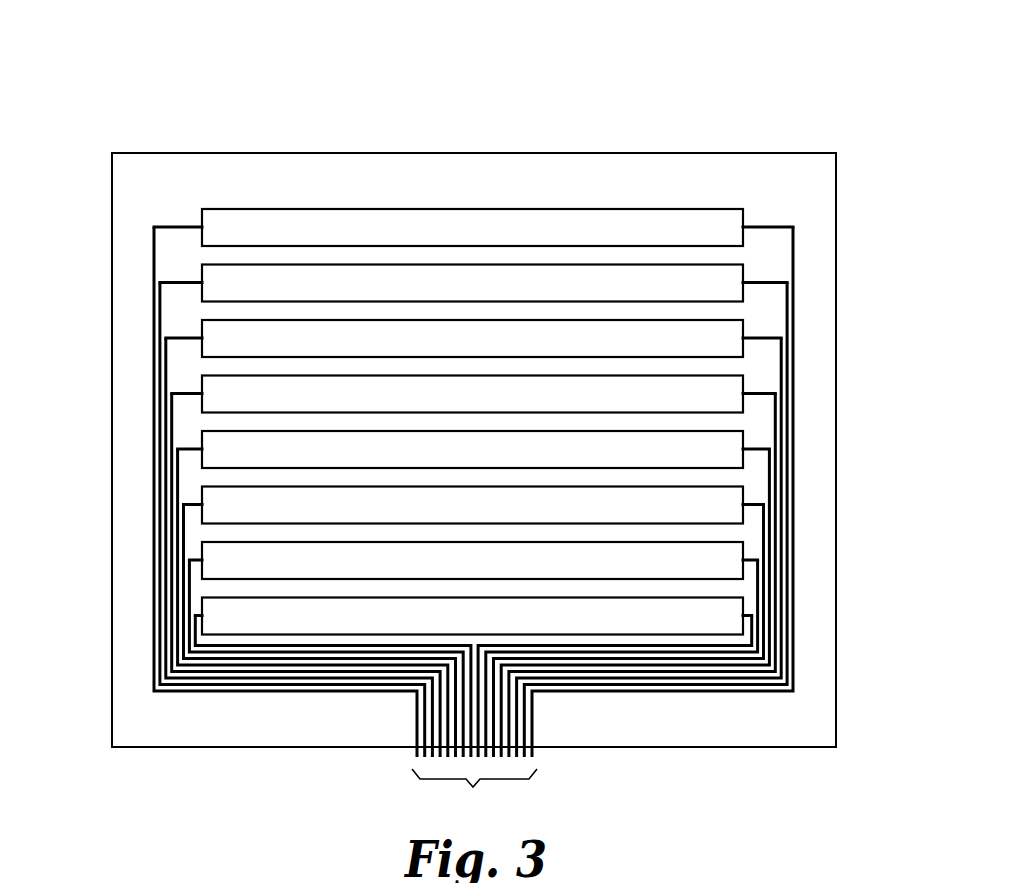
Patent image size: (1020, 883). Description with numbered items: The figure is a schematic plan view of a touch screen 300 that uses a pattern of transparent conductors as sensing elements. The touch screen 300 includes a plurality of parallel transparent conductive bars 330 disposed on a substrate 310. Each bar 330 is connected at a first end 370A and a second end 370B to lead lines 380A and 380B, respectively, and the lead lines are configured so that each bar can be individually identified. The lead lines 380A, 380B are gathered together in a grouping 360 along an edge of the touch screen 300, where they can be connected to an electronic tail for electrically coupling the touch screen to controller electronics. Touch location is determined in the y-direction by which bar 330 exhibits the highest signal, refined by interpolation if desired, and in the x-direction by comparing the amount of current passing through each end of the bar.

The touch screen 300 is at (330, 58).
The substrate 310 is at (682, 157).
The transparent conductive bars 330 is at (557, 273).
The grouping 360 is at (474, 795).
The first end 370A is at (202, 229).
The second end 370B is at (743, 229).
The lead lines 380A is at (160, 301).
The lead lines 380B is at (788, 301).